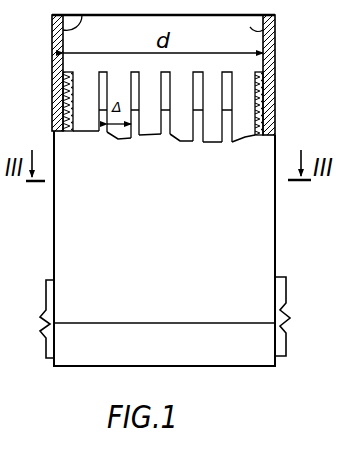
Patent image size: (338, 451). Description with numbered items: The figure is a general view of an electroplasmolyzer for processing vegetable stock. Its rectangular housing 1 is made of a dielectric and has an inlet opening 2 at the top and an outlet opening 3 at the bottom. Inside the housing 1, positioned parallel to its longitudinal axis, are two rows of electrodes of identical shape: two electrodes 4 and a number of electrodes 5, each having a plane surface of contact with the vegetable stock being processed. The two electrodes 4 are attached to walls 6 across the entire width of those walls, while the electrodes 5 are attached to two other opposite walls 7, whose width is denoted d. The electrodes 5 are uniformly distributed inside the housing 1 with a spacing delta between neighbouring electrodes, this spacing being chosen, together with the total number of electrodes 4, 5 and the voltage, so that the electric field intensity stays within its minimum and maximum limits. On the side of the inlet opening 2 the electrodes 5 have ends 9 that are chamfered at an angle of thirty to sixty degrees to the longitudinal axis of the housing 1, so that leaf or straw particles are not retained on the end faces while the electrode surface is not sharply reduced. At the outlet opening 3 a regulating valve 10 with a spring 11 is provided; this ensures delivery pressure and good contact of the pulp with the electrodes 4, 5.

The rectangular housing 1 is at (53, 145).
The inlet opening 2 is at (52, 28).
The outlet opening 3 is at (246, 322).
The electrodes 4 is at (73, 97).
The electrodes 5 is at (198, 128).
The walls 6 is at (276, 70).
The walls 7 is at (276, 28).
The chamfered ends 9 is at (139, 76).
The regulating valve 10 is at (252, 366).
The spring 11 is at (288, 312).